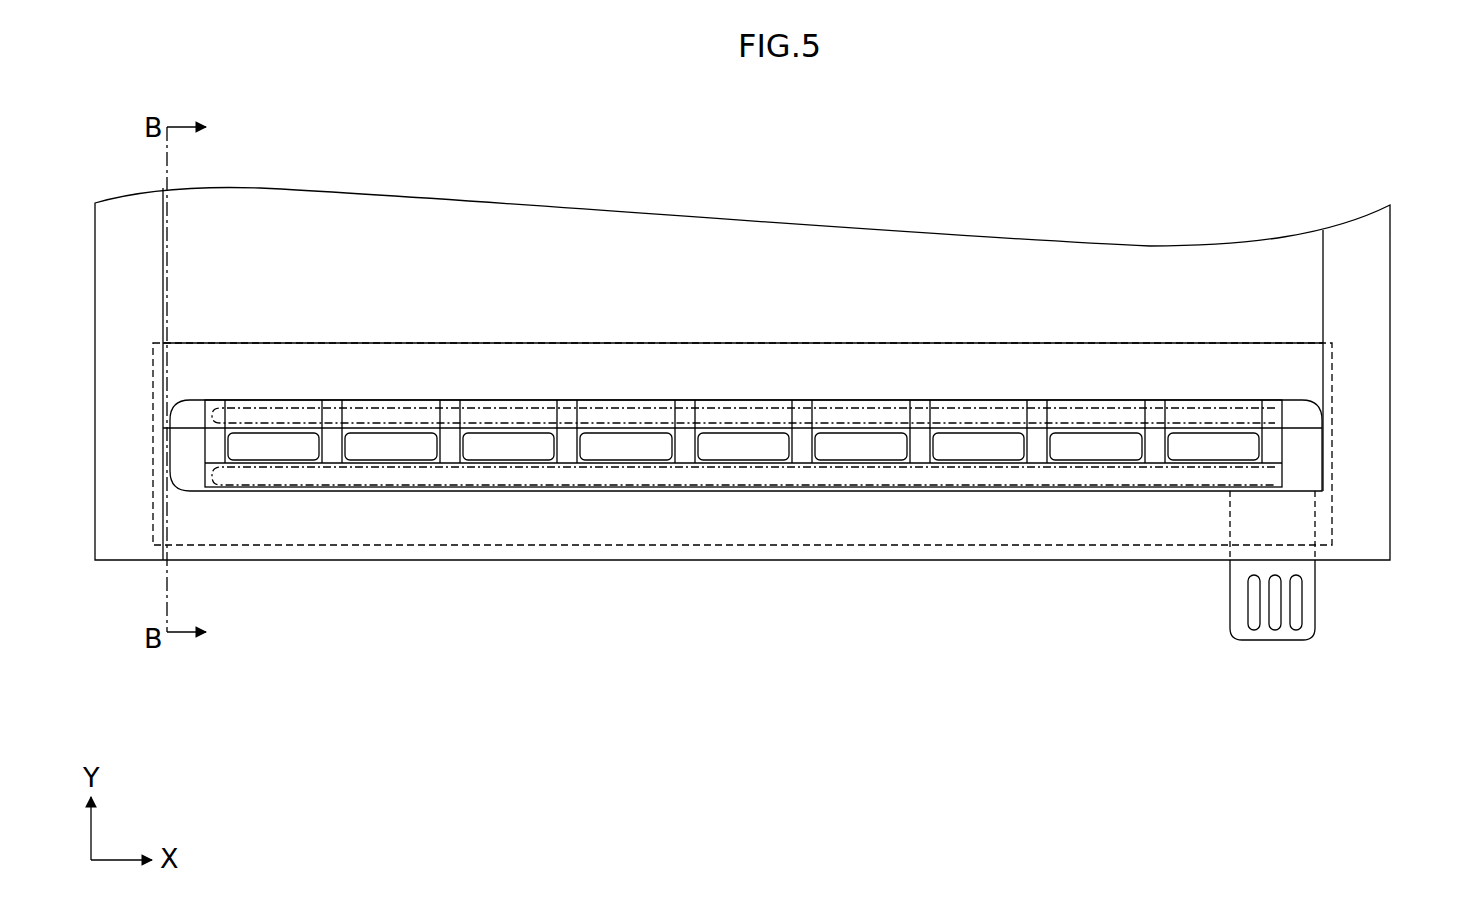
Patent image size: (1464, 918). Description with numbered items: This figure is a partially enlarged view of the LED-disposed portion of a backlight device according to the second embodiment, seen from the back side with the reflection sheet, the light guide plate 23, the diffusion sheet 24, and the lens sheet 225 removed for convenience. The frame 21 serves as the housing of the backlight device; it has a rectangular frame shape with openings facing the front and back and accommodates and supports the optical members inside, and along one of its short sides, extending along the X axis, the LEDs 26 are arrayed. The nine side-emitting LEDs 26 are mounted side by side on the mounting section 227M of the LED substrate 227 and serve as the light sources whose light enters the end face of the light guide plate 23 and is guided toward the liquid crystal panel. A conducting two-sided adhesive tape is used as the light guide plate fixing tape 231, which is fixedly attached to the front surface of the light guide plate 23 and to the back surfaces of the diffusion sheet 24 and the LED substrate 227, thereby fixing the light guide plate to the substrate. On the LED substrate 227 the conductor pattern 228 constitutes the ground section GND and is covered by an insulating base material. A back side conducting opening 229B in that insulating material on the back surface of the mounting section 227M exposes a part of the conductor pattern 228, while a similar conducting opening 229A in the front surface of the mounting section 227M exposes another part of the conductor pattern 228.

The frame 21 is at (123, 542).
The light guide plate 23 is at (1322, 427).
The diffusion sheet 24 is at (1323, 368).
The lens sheet 225 is at (808, 441).
The LEDs 26 is at (738, 450).
The conductor pattern 228 is at (625, 417).
The conducting opening 229A is at (946, 471).
The back side conducting opening 229B is at (503, 406).
The light guide plate fixing tape 231 is at (267, 478).
The mounting section 227M is at (1300, 473).
The LED substrate 227 is at (1345, 557).